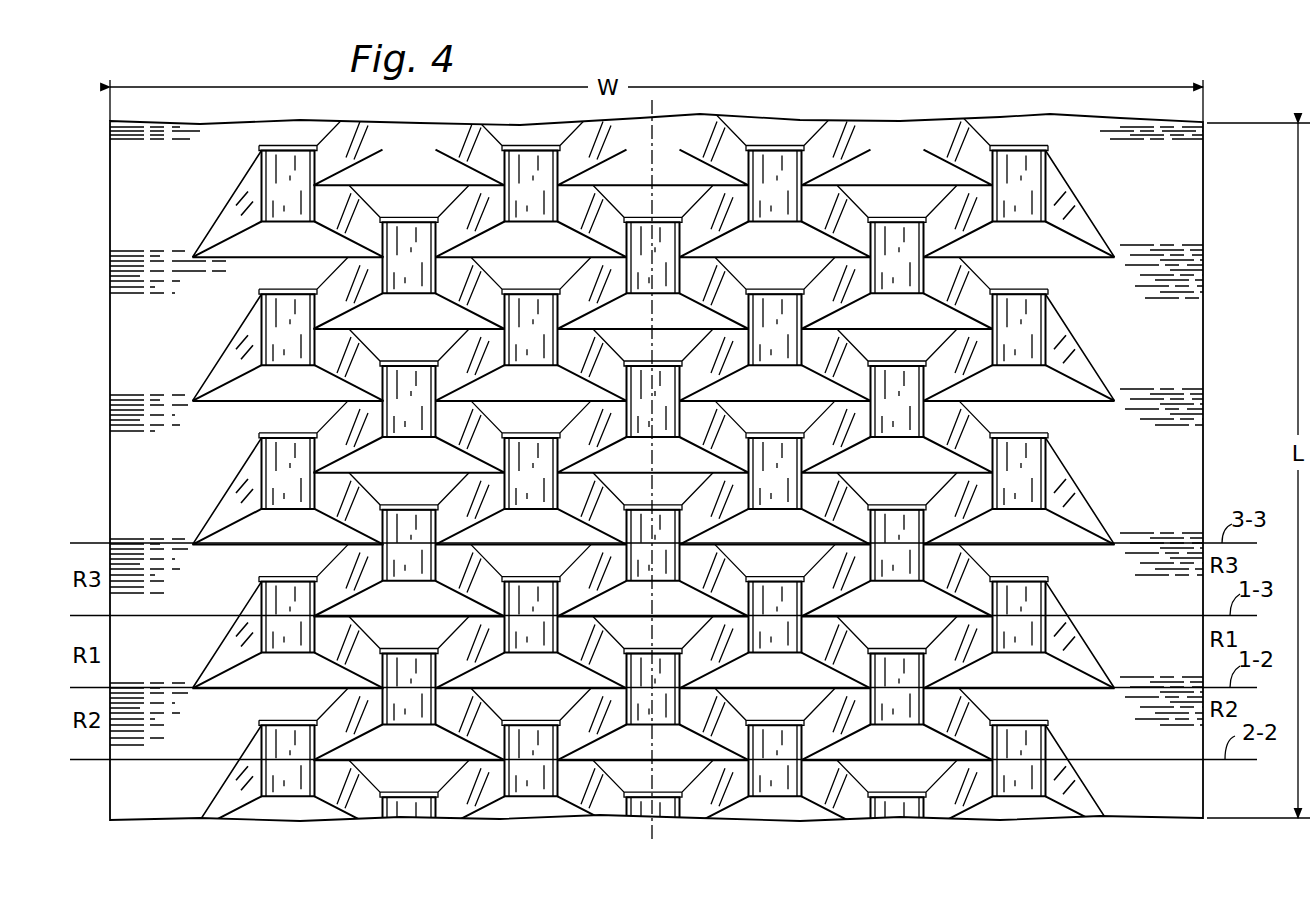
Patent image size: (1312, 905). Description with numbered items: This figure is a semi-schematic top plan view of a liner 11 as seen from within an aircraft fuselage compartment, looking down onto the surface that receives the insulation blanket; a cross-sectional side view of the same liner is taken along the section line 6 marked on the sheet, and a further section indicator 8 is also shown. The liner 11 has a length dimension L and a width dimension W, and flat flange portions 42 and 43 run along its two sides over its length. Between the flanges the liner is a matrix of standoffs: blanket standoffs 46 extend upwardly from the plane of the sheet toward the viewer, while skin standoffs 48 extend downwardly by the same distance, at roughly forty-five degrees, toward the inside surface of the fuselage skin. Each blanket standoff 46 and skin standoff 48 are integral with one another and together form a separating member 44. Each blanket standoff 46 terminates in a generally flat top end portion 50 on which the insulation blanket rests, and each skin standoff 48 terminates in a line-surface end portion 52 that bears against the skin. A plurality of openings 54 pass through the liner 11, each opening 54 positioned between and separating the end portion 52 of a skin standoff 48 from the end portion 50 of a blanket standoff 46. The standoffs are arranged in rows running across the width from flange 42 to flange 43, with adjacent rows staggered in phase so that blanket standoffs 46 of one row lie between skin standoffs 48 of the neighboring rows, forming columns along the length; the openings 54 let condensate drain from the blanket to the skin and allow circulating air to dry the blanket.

The liner 11 is at (1110, 84).
The flange portion 42 is at (1137, 200).
The flange portion 43 is at (147, 200).
The separating member 44 is at (510, 342).
The blanket standoff 46 is at (891, 226).
The skin standoff 48 is at (906, 287).
The top end portion 50 is at (653, 216).
The end portion 52 is at (884, 281).
The opening 54 is at (271, 254).
The section line 6— 6 is at (652, 100).
The section line 8 is at (313, 473).